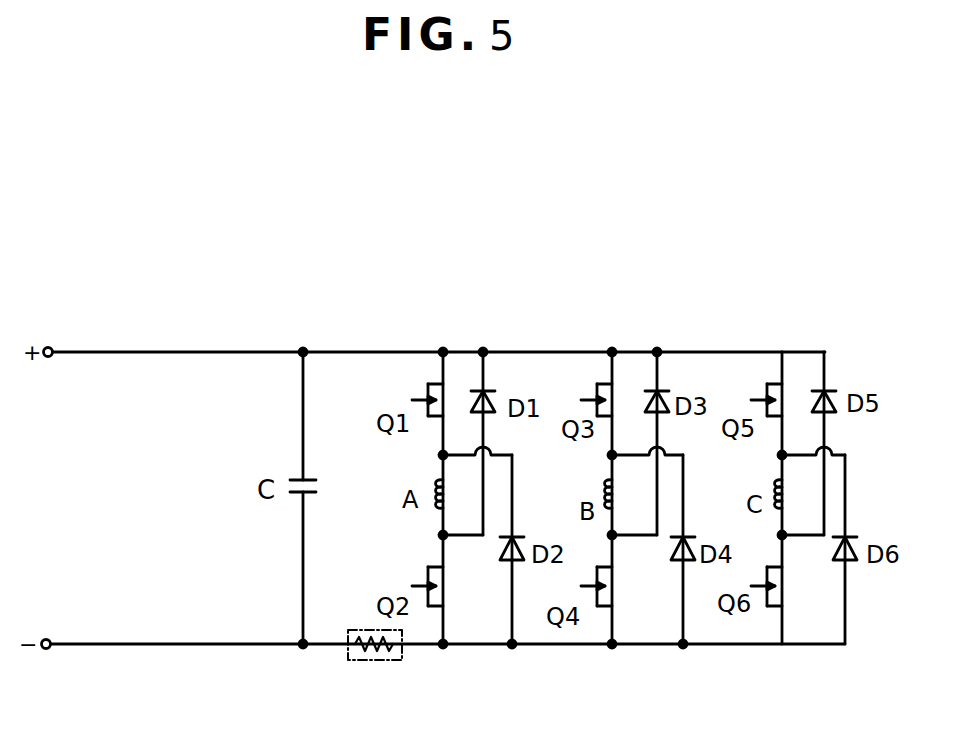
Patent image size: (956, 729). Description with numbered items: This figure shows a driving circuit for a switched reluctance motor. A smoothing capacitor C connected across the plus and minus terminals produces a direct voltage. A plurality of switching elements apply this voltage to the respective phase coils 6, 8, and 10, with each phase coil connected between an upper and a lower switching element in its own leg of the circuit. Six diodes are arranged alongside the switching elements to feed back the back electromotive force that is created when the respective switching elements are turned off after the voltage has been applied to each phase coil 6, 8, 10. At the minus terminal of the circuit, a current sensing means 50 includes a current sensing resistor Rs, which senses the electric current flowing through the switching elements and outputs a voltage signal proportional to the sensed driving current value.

The phase coil 6 is at (437, 481).
The phase coil 8 is at (608, 486).
The phase coil 10 is at (778, 486).
The current sensing means 50 is at (349, 661).